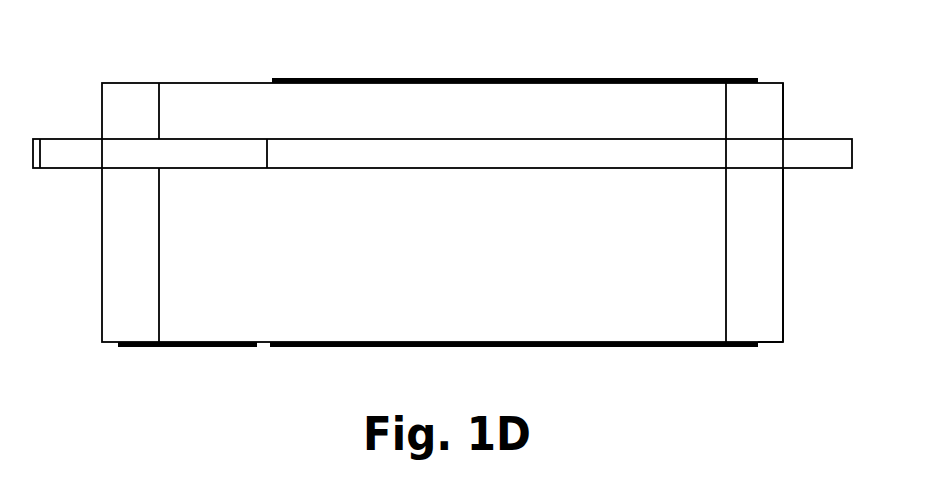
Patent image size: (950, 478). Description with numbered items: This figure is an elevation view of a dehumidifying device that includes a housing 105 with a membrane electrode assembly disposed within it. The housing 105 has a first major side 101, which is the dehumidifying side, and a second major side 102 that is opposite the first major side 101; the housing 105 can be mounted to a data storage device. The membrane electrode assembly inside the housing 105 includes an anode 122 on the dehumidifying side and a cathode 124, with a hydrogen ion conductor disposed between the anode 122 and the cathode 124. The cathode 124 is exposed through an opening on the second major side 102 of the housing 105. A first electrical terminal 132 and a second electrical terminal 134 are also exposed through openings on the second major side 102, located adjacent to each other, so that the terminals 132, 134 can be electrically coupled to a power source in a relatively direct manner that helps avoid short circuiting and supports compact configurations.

The first major side 101 is at (202, 83).
The second major side 102 is at (772, 347).
The housing 105 is at (785, 245).
The anode 122 is at (605, 78).
The cathode 124 is at (667, 347).
The first electrical terminal 132 is at (193, 347).
The second electrical terminal 134 is at (237, 347).